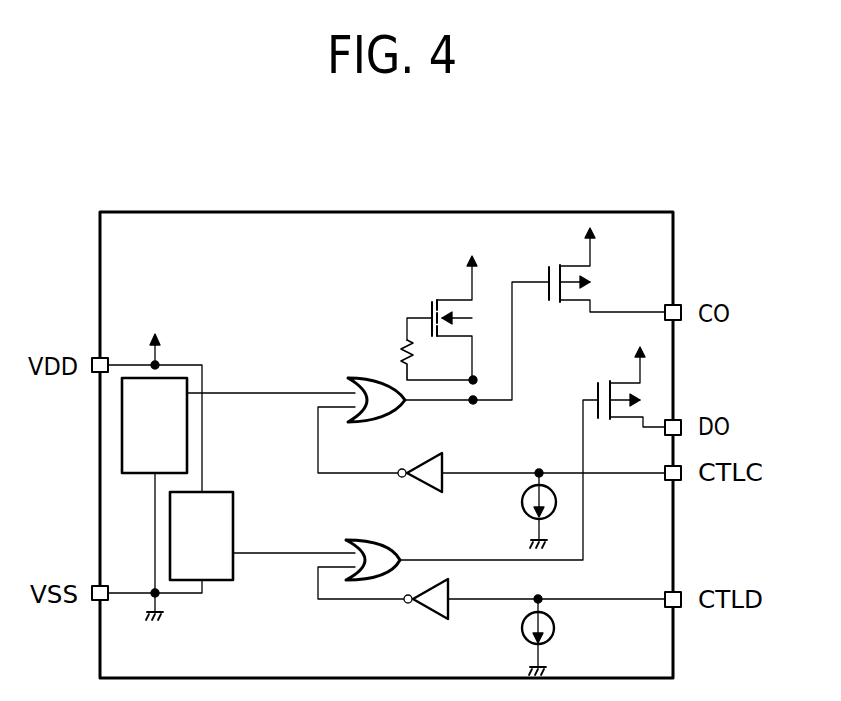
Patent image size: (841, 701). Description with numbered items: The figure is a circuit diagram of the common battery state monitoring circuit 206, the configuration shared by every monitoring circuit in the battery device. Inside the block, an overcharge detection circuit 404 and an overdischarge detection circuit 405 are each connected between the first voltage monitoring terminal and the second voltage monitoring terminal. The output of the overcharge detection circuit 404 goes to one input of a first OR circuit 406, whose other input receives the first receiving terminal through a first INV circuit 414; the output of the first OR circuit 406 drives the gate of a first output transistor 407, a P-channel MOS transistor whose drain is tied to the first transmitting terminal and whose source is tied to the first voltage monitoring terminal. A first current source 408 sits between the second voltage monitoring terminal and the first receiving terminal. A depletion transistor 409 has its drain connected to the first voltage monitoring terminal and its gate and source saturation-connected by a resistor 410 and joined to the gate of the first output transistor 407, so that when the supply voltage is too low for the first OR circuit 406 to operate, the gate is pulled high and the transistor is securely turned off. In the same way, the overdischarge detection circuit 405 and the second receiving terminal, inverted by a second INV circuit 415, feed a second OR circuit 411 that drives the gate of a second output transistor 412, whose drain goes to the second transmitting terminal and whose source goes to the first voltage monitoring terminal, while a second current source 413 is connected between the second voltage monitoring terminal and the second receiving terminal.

The battery state monitoring circuit 206 is at (238, 215).
The overcharge detection circuit 404 is at (172, 372).
The overdischarge detection circuit 405 is at (210, 490).
The first OR circuit 406 is at (358, 378).
The first output transistor 407 is at (572, 263).
The first current source 408 is at (523, 513).
The depletion transistor 409 is at (459, 299).
The resistor 410 is at (403, 340).
The second OR circuit 411 is at (350, 540).
The second output transistor 412 is at (625, 383).
The second current source 413 is at (522, 628).
The first INV circuit 414 is at (445, 464).
The second INV circuit 415 is at (440, 610).